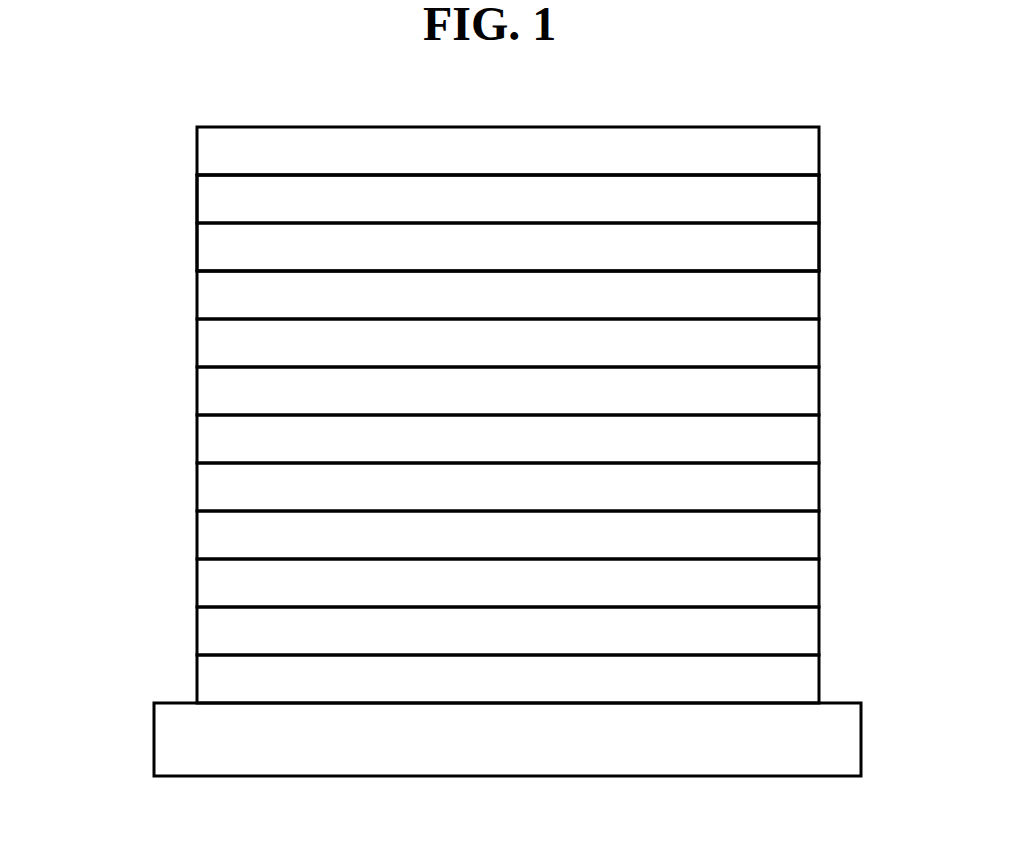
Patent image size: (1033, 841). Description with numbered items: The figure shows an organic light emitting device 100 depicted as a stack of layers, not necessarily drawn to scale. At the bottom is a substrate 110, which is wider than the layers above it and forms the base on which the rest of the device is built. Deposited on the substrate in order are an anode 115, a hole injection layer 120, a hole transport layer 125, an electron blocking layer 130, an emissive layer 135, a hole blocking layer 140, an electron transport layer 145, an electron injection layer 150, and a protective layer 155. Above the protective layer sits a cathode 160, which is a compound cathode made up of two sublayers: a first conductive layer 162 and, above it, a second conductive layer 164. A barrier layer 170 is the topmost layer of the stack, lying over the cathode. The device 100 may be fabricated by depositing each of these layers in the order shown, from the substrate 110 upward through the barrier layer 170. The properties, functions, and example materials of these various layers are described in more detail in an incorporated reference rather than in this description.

The organic light emitting device 100 is at (660, 88).
The substrate 110 is at (154, 740).
The anode 115 is at (197, 680).
The hole injection layer 120 is at (197, 632).
The hole transport layer 125 is at (197, 584).
The electron blocking layer 130 is at (197, 536).
The emissive layer 135 is at (197, 488).
The hole blocking layer 140 is at (197, 440).
The electron transport layer 145 is at (197, 392).
The electron injection layer 150 is at (197, 344).
The protective layer 155 is at (197, 296).
The cathode 160 is at (188, 180).
The first conductive layer 162 is at (819, 246).
The second conductive layer 164 is at (819, 198).
The barrier layer 170 is at (197, 152).